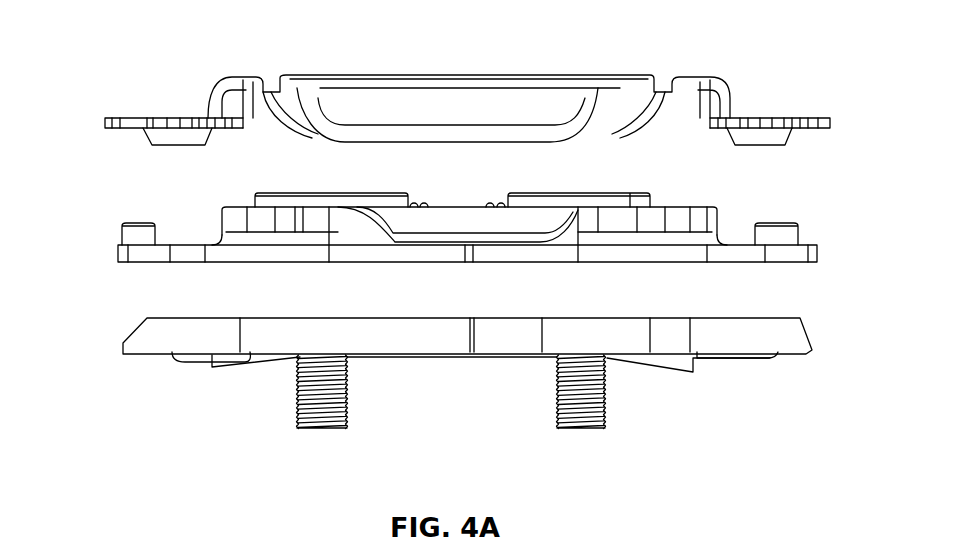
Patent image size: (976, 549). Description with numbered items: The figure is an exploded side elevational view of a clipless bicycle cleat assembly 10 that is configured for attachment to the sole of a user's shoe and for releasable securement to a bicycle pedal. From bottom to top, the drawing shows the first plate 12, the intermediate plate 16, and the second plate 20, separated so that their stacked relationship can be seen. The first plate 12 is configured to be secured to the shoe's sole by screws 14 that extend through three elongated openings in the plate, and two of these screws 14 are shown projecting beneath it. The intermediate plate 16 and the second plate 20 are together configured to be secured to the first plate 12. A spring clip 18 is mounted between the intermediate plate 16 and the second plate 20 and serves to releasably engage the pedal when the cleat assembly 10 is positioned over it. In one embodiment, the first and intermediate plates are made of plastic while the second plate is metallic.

The cleat assembly 10 is at (103, 50).
The first plate 12 is at (783, 344).
The screws 14 is at (295, 388).
The intermediate plate 16 is at (818, 252).
The spring clip 18 is at (718, 207).
The second plate 20 is at (731, 83).